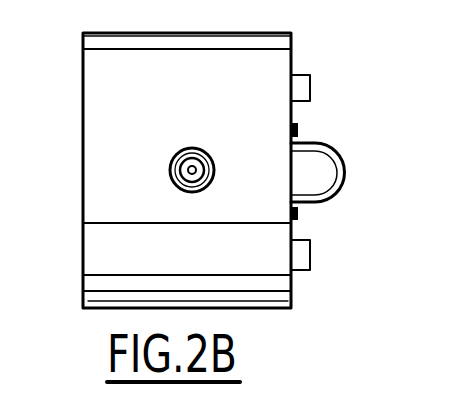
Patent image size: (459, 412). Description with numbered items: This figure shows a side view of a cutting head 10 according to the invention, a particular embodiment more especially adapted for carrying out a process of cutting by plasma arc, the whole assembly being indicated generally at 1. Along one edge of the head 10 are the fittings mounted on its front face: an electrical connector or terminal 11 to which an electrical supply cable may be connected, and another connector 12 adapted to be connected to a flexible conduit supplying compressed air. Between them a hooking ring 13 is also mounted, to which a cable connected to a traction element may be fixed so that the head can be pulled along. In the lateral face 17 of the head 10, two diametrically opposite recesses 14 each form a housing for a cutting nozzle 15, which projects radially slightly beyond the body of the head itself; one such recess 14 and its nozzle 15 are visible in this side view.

The pendant device 1 is at (102, 83).
The cutting head 10 is at (92, 264).
The electrical connector 11 is at (302, 93).
The connector 12 is at (300, 258).
The hooking ring 13 is at (343, 185).
The recess 14 is at (205, 149).
The cutting nozzle 15 is at (181, 169).
The lateral face 17 is at (267, 67).